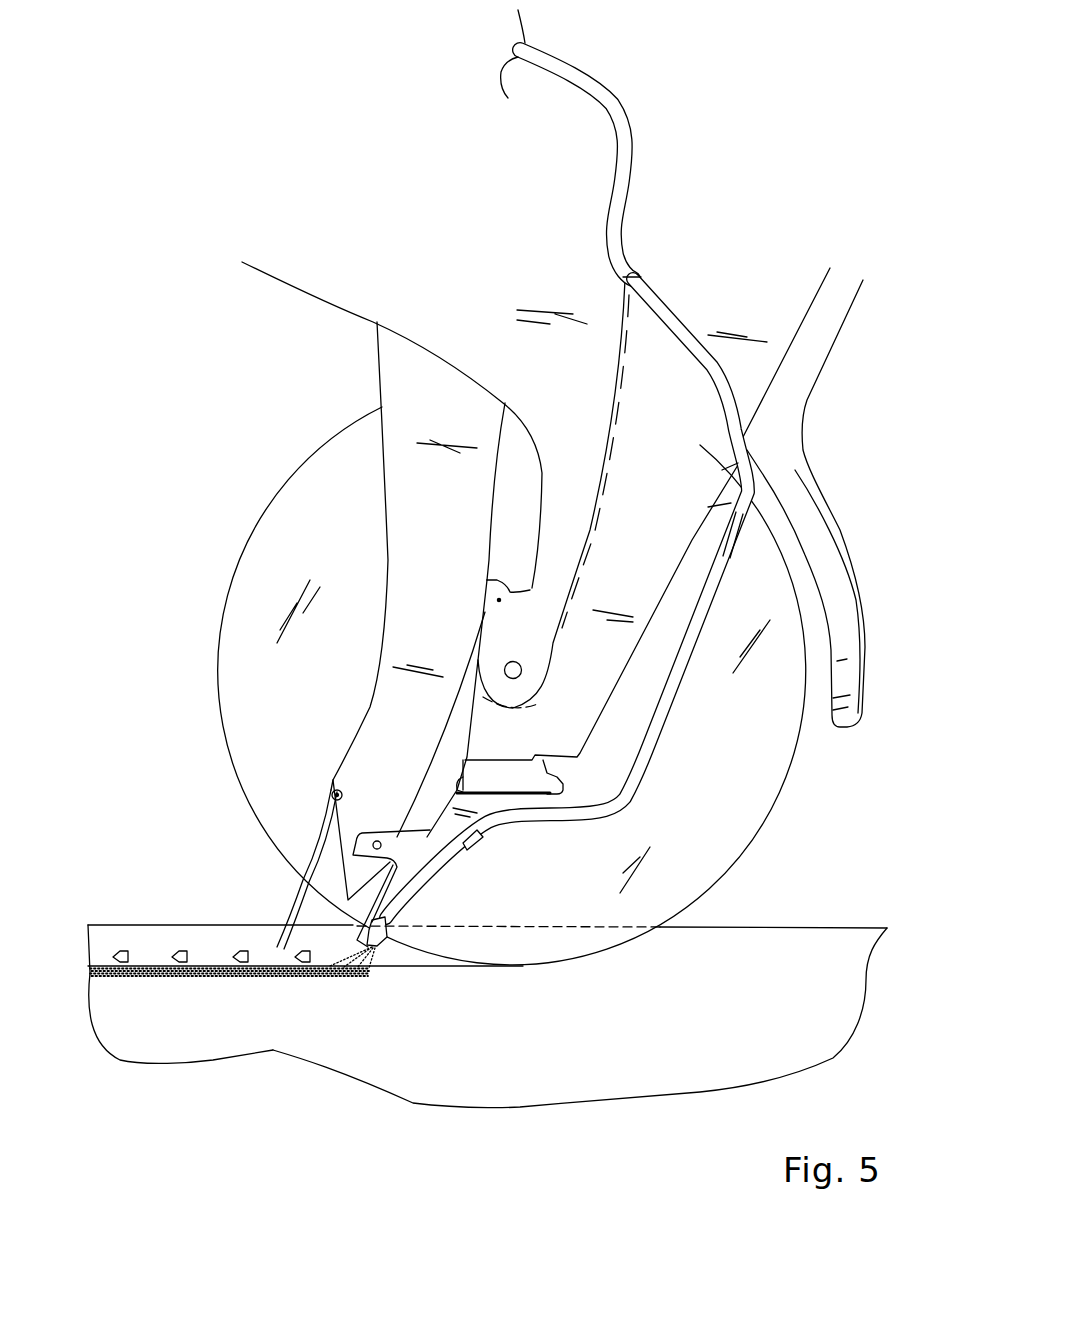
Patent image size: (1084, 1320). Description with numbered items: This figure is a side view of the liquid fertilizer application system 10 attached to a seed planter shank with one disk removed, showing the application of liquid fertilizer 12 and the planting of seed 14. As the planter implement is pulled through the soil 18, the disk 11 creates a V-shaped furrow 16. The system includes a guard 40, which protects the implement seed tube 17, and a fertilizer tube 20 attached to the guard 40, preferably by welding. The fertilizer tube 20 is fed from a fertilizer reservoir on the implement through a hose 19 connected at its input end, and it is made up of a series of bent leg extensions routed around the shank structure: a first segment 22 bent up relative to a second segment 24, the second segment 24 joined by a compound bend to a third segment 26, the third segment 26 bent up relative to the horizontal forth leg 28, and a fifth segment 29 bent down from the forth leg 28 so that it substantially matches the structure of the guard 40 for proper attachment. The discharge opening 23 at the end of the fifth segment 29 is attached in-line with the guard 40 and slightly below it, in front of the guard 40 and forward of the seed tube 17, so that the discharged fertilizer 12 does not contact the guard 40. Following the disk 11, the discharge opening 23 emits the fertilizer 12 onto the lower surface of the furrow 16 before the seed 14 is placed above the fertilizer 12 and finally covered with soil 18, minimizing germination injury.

The liquid fertilizer application system 10 is at (615, 547).
The disk 11 is at (317, 513).
The liquid fertilizer 12 is at (487, 975).
The seed 14 is at (177, 955).
The furrow 16 is at (227, 940).
The seed tube 17 is at (385, 762).
The soil 18 is at (307, 1027).
The hose 19 is at (607, 217).
The fertilizer tube 20 is at (642, 464).
The first segment 22 is at (660, 303).
The discharge opening 23 is at (385, 965).
The second segment 24 is at (725, 403).
The third segment 26 is at (676, 716).
The forth leg 28 is at (567, 817).
The fifth segment 29 is at (397, 860).
The guard 40 is at (440, 843).